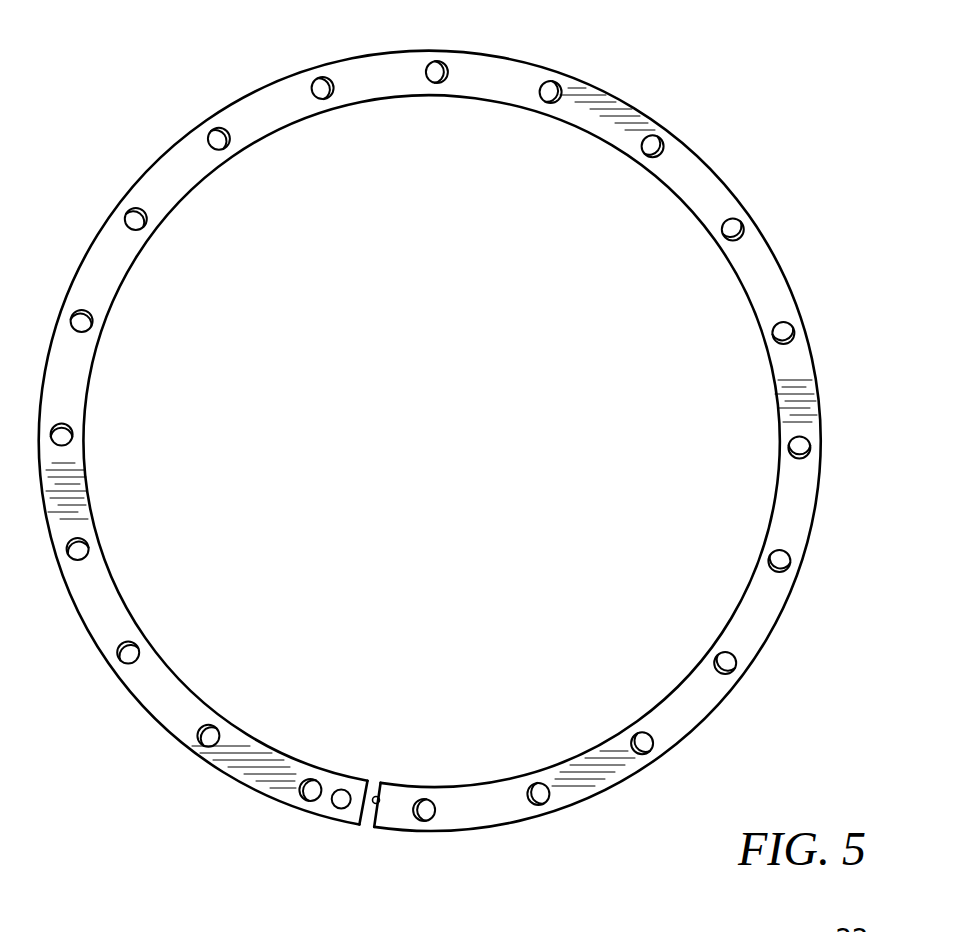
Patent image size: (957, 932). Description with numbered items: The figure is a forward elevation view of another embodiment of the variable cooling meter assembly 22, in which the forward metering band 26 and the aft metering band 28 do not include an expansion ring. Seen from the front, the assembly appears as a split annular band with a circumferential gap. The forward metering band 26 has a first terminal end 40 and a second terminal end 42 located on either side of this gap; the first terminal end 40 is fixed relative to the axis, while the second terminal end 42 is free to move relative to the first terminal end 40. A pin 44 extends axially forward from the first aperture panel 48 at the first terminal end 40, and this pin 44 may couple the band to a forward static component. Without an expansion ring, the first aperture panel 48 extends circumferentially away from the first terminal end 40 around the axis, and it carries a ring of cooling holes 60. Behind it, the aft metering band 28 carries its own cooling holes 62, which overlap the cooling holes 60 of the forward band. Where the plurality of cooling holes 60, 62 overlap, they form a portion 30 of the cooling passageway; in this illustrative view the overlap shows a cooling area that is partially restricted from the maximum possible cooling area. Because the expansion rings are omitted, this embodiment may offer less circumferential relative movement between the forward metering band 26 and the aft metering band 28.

The variable cooling meter assembly 22 is at (466, 461).
The forward metering band 26 is at (778, 253).
The aft metering band 28 is at (738, 160).
The portion of the cooling passageway 30 is at (559, 85).
The first terminal end 40 is at (362, 818).
The second terminal end 42 is at (378, 802).
The pin 44 is at (342, 808).
The first aperture panel 48 is at (790, 356).
The cooling holes 60 is at (792, 566).
The cooling holes 62 is at (722, 676).